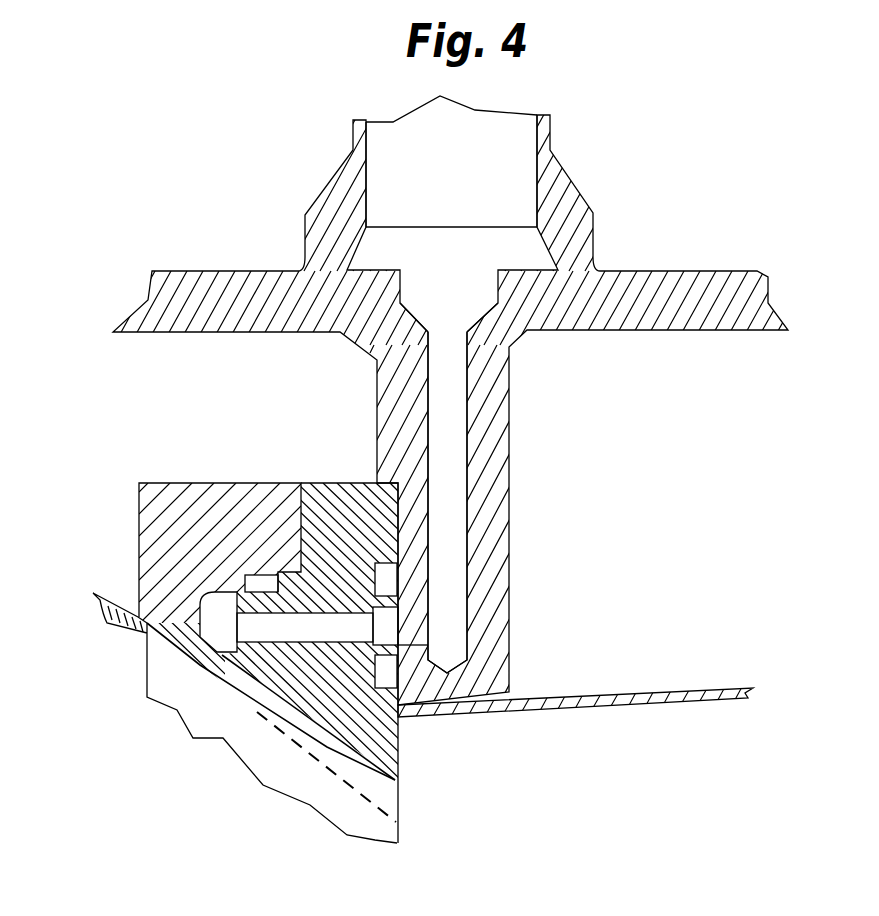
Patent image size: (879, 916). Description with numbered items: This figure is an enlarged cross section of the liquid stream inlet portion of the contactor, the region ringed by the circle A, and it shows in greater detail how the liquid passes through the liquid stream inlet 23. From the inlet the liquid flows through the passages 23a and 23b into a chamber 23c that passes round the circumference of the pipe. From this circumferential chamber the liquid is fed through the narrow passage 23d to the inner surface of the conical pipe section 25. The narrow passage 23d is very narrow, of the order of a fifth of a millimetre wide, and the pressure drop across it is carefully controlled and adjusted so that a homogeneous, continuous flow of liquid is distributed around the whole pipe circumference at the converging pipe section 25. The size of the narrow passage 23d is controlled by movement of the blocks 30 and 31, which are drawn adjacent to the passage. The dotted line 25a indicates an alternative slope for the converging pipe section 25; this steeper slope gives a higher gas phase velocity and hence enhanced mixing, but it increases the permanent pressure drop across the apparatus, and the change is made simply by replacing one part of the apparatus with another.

The liquid stream inlet 23 is at (493, 120).
The passage 23a is at (443, 404).
The passage 23b is at (323, 630).
The chamber 23c is at (213, 626).
The narrow passage 23d is at (217, 678).
The conical pipe section 25 is at (327, 746).
The dotted line 25a is at (347, 788).
The block 30 is at (167, 527).
The block 31 is at (393, 760).
The circle A is at (640, 112).